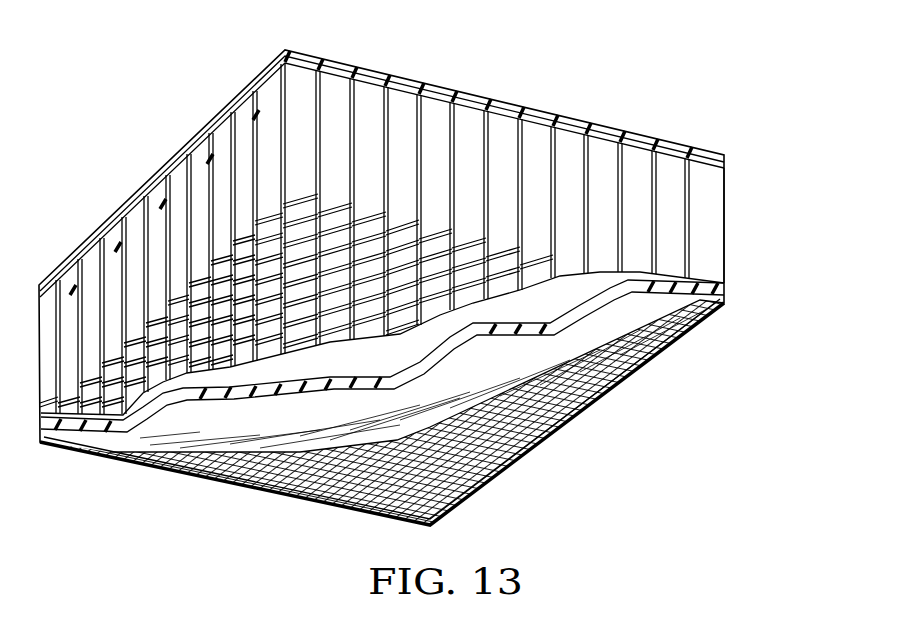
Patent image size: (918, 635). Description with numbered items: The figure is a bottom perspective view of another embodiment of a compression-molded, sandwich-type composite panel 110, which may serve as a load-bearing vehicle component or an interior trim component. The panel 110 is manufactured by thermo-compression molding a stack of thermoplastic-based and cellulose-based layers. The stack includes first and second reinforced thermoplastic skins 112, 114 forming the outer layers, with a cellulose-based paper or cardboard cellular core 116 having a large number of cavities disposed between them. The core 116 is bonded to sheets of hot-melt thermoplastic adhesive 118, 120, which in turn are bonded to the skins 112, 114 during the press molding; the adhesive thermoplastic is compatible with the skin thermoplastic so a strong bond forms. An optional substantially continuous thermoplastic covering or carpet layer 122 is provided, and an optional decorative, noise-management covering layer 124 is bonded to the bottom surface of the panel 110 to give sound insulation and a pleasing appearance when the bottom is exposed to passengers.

The compression-molded sandwich-type composite panel 110 is at (556, 58).
The first reinforced thermoplastic skin 112 is at (727, 171).
The second reinforced thermoplastic skin 114 is at (727, 305).
The cellular core 116 is at (727, 231).
The sheet of hot-melt adhesive 118 is at (698, 175).
The sheet of hot-melt adhesive 120 is at (727, 286).
The covering or carpet layer 122 is at (727, 159).
The decorative noise-management covering layer 124 is at (690, 334).